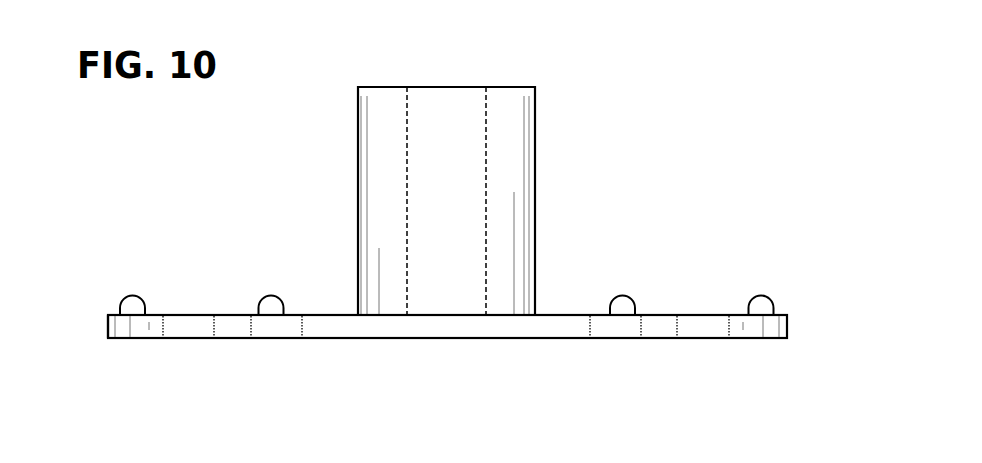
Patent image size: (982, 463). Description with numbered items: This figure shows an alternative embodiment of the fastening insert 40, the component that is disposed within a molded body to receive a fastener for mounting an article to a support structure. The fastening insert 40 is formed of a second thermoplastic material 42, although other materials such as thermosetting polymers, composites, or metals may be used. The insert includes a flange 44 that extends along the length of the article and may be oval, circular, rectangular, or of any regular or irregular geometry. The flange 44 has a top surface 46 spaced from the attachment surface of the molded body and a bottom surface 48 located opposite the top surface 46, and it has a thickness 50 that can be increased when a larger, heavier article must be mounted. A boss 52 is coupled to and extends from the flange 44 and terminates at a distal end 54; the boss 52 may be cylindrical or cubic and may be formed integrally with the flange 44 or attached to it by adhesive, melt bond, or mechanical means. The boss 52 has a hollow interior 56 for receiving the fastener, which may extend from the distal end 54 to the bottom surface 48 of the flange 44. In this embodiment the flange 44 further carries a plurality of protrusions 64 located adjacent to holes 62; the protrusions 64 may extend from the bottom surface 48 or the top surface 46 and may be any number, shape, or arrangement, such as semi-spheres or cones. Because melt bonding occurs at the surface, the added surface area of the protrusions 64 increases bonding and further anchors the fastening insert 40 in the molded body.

The fastening insert 40 is at (664, 179).
The second thermoplastic material 42 is at (512, 257).
The flange 44 is at (535, 327).
The top surface 46 is at (114, 315).
The bottom surface 48 is at (147, 340).
The thickness 50 is at (107, 327).
The boss 52 is at (386, 178).
The distal end 54 is at (386, 87).
The hollow interior 56 is at (486, 116).
The holes 62 is at (302, 327).
The protrusions 64 is at (133, 303).